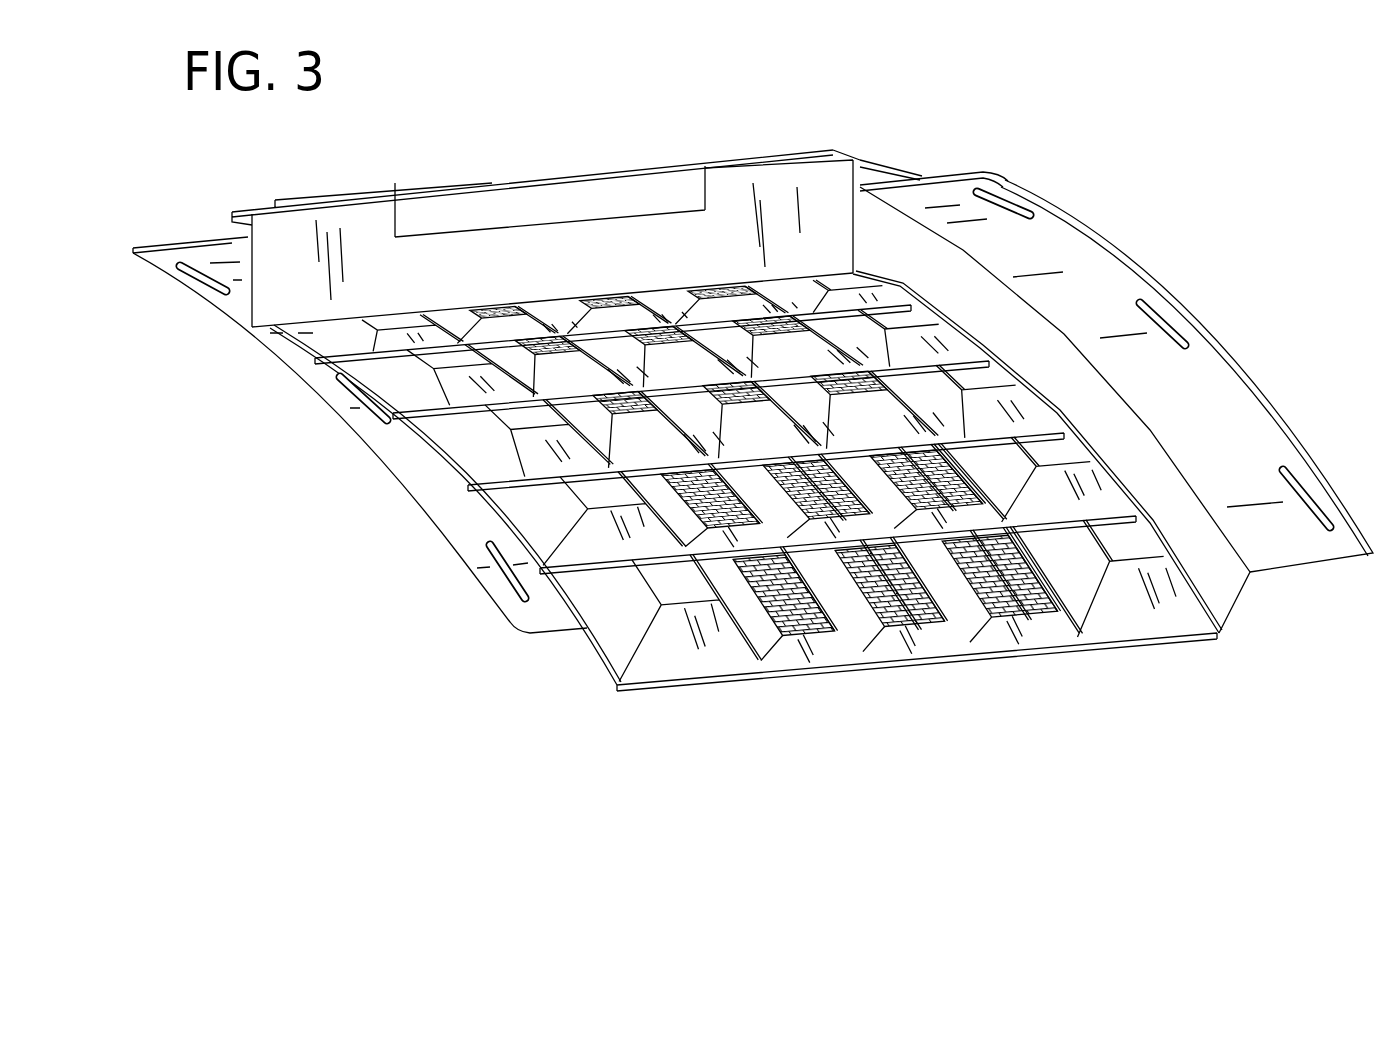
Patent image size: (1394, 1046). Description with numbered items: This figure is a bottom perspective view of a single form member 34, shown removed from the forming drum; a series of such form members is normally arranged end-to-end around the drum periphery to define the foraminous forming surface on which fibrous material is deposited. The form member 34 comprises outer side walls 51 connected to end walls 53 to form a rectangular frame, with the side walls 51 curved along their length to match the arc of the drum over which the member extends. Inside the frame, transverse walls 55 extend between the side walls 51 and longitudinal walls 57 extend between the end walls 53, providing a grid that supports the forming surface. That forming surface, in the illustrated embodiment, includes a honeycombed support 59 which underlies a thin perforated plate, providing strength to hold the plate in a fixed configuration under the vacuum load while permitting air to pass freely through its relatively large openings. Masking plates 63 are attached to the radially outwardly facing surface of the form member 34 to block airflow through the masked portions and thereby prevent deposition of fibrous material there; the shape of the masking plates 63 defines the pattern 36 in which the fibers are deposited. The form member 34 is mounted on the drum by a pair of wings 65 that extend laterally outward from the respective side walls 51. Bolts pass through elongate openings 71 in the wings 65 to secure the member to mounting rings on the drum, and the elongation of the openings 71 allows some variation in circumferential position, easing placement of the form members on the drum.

The form member 34 is at (1190, 276).
The pattern 36 is at (498, 182).
The outer side wall 51 is at (597, 650).
The end wall 53 is at (732, 200).
The transverse wall 55 is at (950, 353).
The longitudinal wall 57 is at (548, 322).
The honeycombed support 59 is at (790, 605).
The masking plate 63 is at (396, 186).
The wing 65 is at (1230, 390).
The elongate opening 71 is at (1000, 205).